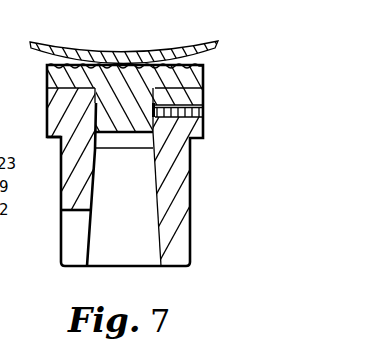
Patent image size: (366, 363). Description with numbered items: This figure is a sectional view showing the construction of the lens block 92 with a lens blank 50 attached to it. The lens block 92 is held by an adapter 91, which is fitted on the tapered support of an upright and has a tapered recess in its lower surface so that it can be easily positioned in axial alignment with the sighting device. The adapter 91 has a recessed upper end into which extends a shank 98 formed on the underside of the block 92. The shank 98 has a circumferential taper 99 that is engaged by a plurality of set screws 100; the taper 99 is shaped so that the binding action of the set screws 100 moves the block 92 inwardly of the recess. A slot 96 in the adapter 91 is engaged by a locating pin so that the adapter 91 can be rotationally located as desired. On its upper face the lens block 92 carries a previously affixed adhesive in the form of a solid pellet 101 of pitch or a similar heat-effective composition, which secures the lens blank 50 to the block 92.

The transparent cover plate 50 is at (139, 52).
The pellet 101 is at (45, 61).
The lens block 92 is at (195, 81).
The set screws 100 is at (204, 109).
The circumferential taper 99 is at (95, 104).
The shank 98 is at (133, 128).
The slot 96 is at (68, 235).
The adapter 91 is at (181, 214).